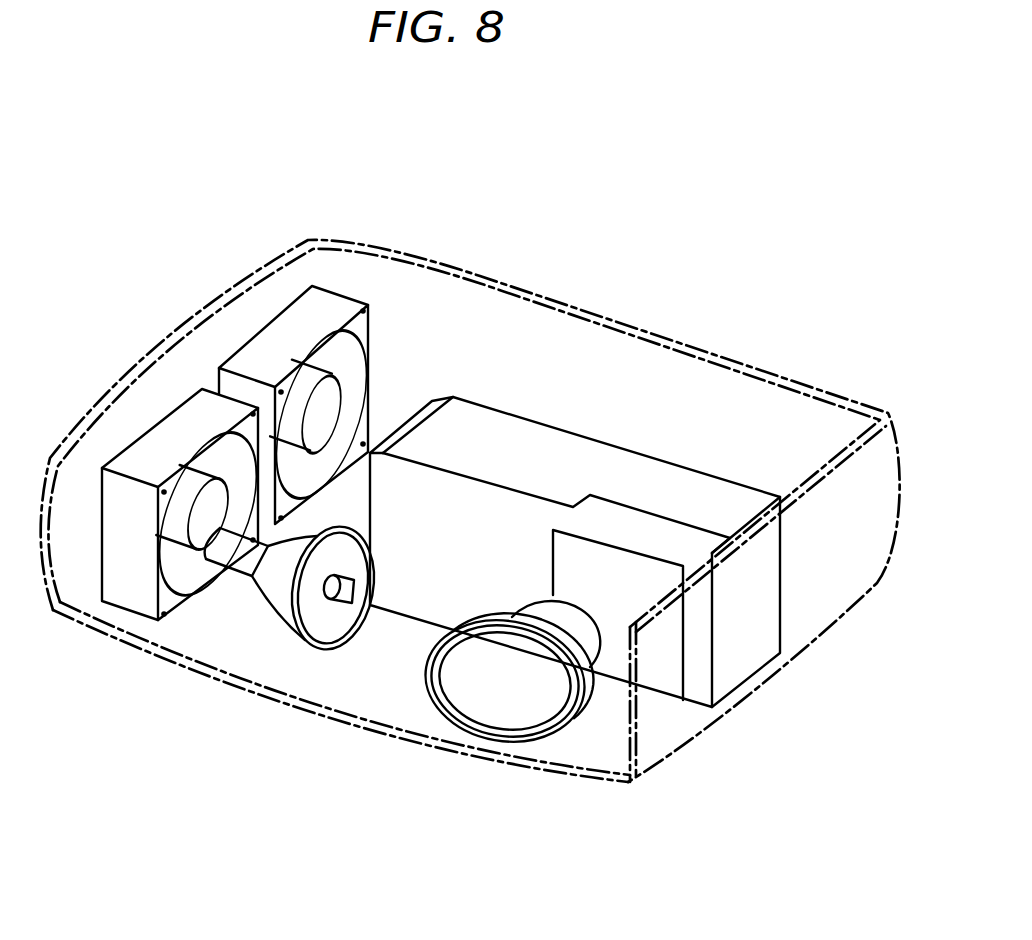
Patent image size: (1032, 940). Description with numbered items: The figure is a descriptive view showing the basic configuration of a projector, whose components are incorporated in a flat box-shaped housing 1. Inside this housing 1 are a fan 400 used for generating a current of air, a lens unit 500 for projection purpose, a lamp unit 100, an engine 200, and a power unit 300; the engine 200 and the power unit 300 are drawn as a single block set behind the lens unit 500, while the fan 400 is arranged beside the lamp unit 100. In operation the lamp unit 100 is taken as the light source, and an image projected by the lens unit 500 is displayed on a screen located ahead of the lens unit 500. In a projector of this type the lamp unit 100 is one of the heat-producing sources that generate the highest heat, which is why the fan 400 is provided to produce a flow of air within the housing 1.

The projector housing 1 is at (757, 357).
The lamp unit 100 is at (297, 607).
The engine 200 is at (522, 448).
The power unit 300 is at (575, 530).
The fan 400 is at (172, 424).
The lens unit 500 is at (520, 740).